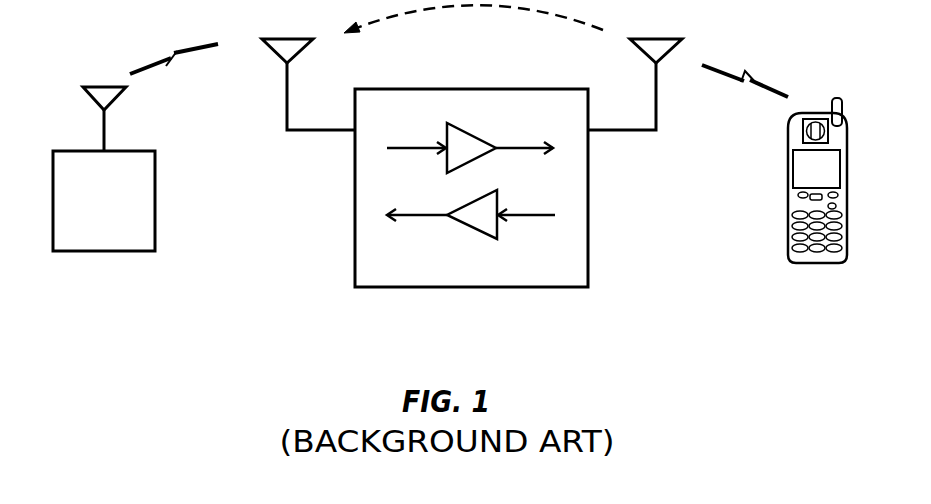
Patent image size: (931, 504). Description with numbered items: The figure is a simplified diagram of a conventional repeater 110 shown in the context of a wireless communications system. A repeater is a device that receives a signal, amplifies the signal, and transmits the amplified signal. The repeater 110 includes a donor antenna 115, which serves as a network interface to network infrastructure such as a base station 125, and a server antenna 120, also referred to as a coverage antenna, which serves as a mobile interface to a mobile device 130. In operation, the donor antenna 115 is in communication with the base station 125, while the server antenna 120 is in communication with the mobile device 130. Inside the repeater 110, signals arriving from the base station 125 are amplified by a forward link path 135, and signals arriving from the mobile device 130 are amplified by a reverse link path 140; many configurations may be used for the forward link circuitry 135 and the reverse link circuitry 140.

The repeater 110 is at (471, 203).
The donor antenna 115 is at (301, 50).
The server antenna 120 is at (643, 50).
The base station 125 is at (120, 251).
The mobile device 130 is at (818, 263).
The forward link path 135 is at (473, 133).
The reverse link path 140 is at (477, 230).